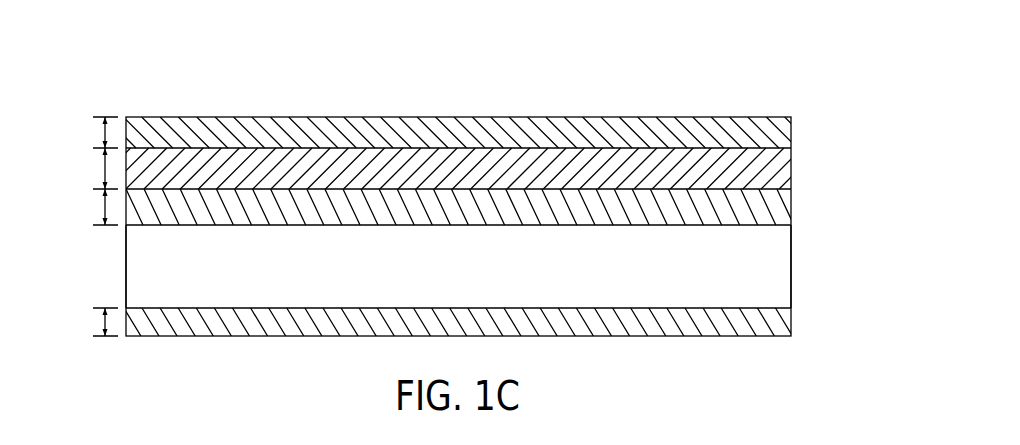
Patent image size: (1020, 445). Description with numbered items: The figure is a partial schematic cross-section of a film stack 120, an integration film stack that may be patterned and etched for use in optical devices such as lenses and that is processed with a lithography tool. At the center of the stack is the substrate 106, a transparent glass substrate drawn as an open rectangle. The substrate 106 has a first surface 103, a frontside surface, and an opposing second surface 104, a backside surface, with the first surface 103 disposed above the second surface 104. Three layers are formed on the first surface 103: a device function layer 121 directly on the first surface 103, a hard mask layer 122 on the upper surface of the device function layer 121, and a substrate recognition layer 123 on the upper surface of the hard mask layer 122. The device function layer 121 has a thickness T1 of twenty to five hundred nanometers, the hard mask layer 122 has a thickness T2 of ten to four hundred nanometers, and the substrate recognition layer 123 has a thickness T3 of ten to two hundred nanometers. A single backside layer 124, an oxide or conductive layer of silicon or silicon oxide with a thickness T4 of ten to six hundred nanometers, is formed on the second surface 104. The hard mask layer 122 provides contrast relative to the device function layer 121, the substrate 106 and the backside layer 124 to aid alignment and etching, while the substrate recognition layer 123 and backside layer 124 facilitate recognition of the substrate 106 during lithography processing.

The film stack 120 is at (776, 56).
The substrate recognition layer 123 is at (784, 137).
The hard mask layer 122 is at (784, 172).
The device function layer 121 is at (784, 210).
The substrate 106 is at (784, 270).
The first surface 103 is at (172, 226).
The second surface 104 is at (178, 308).
The backside layer 124 is at (172, 327).
The thickness of the device function layer T1 is at (104, 207).
The thickness of the hard mask layer T2 is at (104, 170).
The thickness of the substrate recognition layer T3 is at (104, 131).
The thickness of the backside layer T4 is at (104, 323).